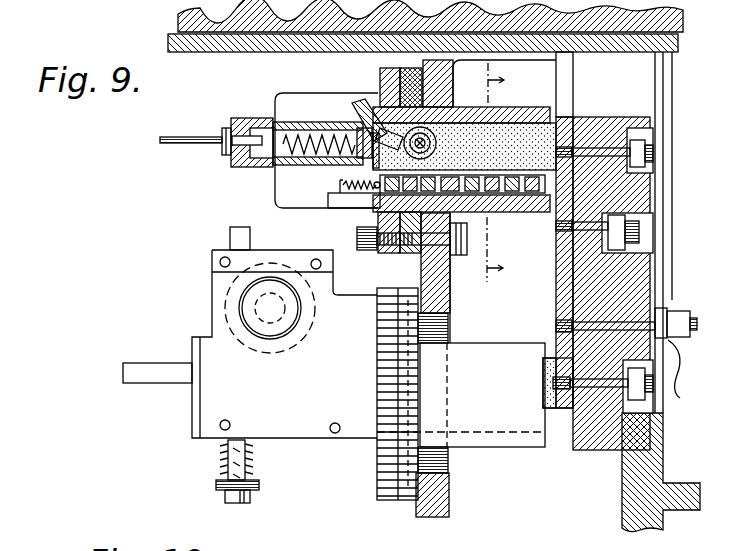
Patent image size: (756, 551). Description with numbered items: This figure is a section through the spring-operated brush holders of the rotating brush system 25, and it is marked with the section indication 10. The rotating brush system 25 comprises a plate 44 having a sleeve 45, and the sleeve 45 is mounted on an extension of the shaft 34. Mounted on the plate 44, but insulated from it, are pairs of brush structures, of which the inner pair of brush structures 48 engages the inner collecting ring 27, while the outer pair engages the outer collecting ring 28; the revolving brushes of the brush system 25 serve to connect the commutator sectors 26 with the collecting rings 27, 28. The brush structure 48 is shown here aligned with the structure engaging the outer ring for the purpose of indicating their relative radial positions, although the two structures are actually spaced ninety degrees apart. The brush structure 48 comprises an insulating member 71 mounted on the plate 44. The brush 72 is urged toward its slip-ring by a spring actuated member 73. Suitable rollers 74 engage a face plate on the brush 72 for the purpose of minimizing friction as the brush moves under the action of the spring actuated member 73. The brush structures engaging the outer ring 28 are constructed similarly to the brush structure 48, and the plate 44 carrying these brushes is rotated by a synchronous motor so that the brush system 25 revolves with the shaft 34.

The shaft 34 is at (186, 16).
The sleeve 45 is at (263, 53).
The brush structure 48 is at (380, 90).
The brush 72 is at (529, 150).
The inner collecting ring 27 is at (561, 130).
The spring actuated member 73 is at (322, 168).
The rollers 74 is at (527, 192).
The insulating member 71 is at (415, 256).
The rotating brush system 25 is at (445, 289).
The commutator sectors 26 is at (556, 300).
The outer collecting ring 28 is at (562, 410).
The plate 44 is at (432, 514).
The section line 10- 10 is at (509, 173).